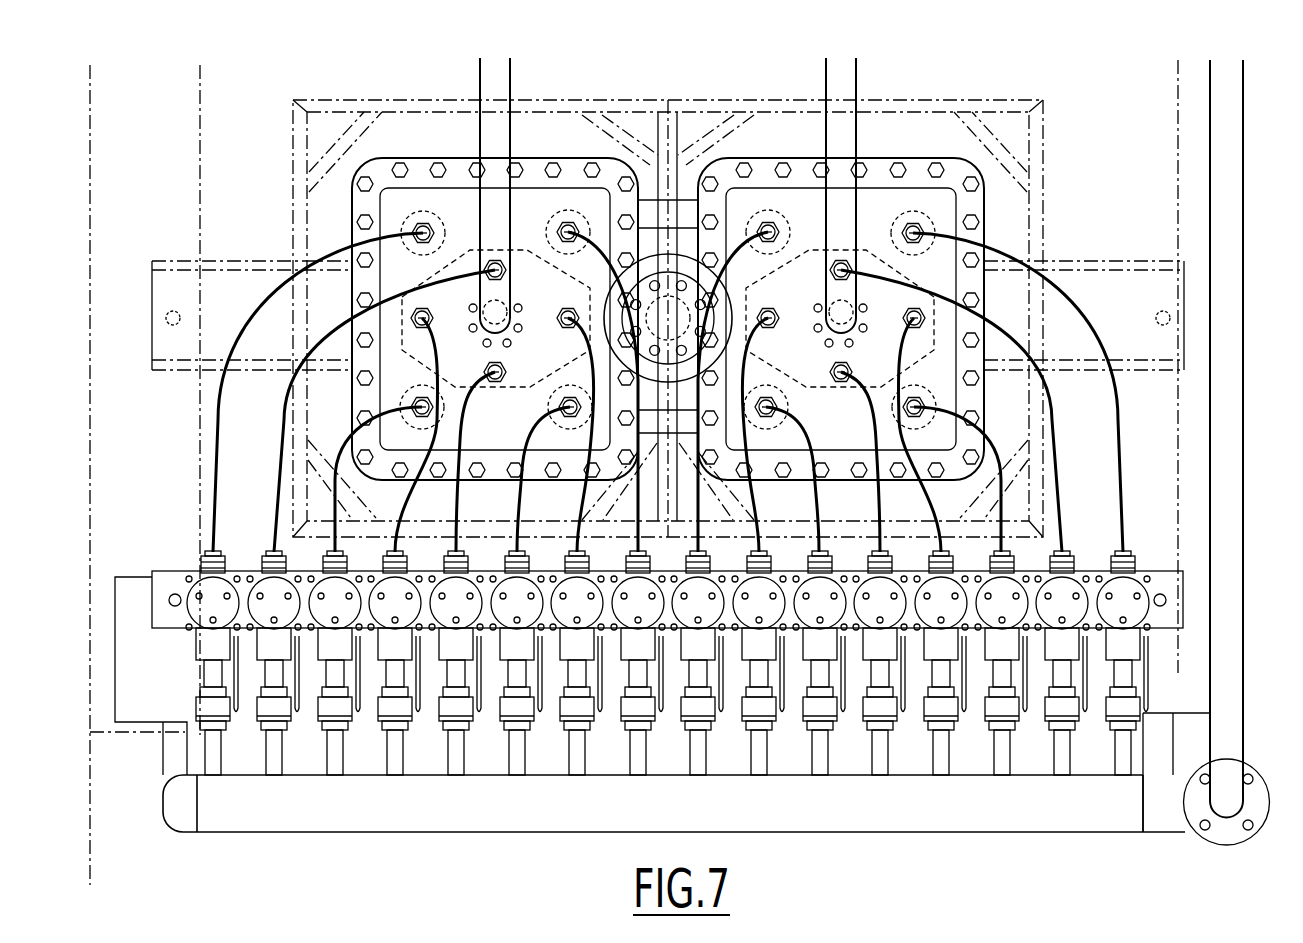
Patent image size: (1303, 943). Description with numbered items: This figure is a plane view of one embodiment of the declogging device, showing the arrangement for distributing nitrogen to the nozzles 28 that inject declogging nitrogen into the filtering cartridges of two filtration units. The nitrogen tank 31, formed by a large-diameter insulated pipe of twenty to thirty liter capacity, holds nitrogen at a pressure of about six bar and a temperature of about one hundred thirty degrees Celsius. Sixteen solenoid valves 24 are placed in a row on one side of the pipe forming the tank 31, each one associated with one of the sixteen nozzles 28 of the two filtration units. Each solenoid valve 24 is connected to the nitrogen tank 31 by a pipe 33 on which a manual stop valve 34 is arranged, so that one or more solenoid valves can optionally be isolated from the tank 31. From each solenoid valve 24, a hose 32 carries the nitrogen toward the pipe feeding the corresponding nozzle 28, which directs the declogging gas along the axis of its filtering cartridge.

The solenoid valve 24 is at (192, 582).
The nozzle 28 is at (434, 234).
The nitrogen tank 31 is at (990, 835).
The hose 32 is at (283, 414).
The pipe 33 is at (668, 774).
The manual stop valve 34 is at (196, 708).